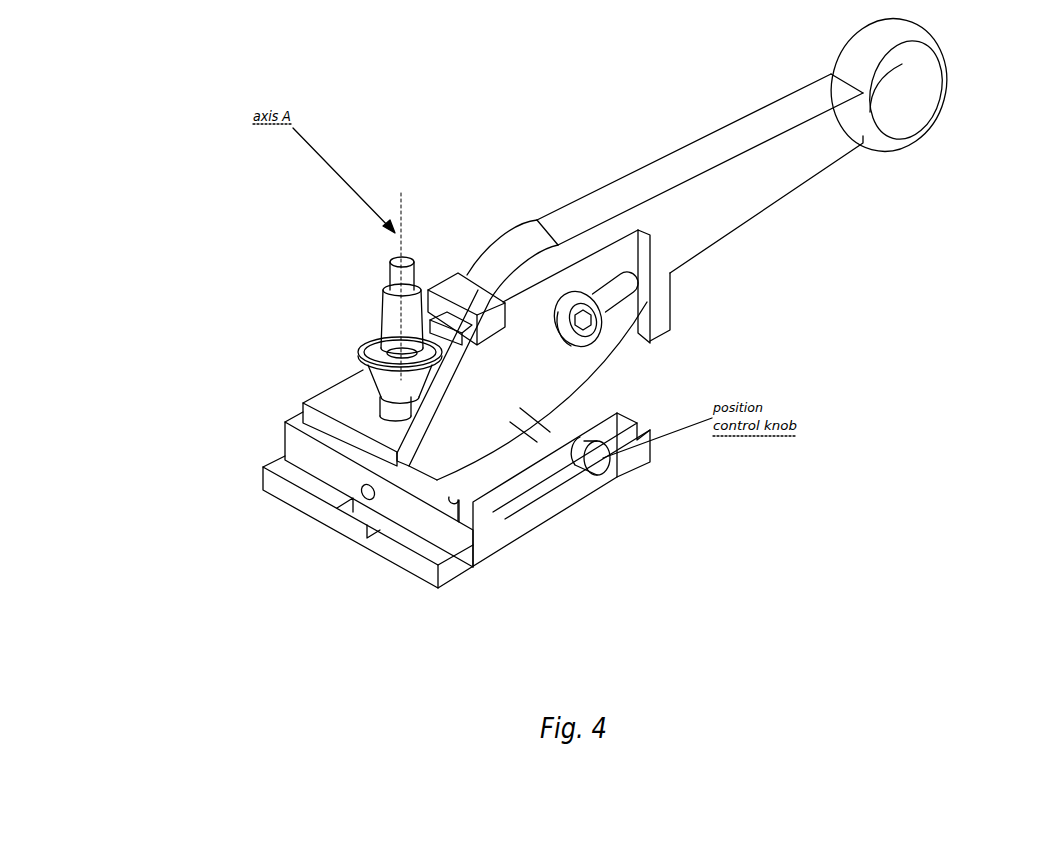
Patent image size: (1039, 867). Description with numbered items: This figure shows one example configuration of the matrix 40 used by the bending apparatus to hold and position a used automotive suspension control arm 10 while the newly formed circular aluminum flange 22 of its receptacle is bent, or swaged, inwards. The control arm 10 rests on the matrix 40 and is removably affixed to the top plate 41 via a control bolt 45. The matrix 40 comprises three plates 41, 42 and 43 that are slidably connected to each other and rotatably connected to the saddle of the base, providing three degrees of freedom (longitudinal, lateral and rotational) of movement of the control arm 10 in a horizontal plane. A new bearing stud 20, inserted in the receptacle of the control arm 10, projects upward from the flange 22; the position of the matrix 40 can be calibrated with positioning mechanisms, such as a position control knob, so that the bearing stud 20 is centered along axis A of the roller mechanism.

The control arm 10 is at (825, 152).
The bearing stud 20 is at (405, 258).
The circular flange 22 is at (363, 338).
The matrix 40 is at (283, 357).
The top plate 41 is at (315, 420).
The plate 42 is at (298, 458).
The plate 43 is at (398, 555).
The control bolt 45 is at (588, 318).